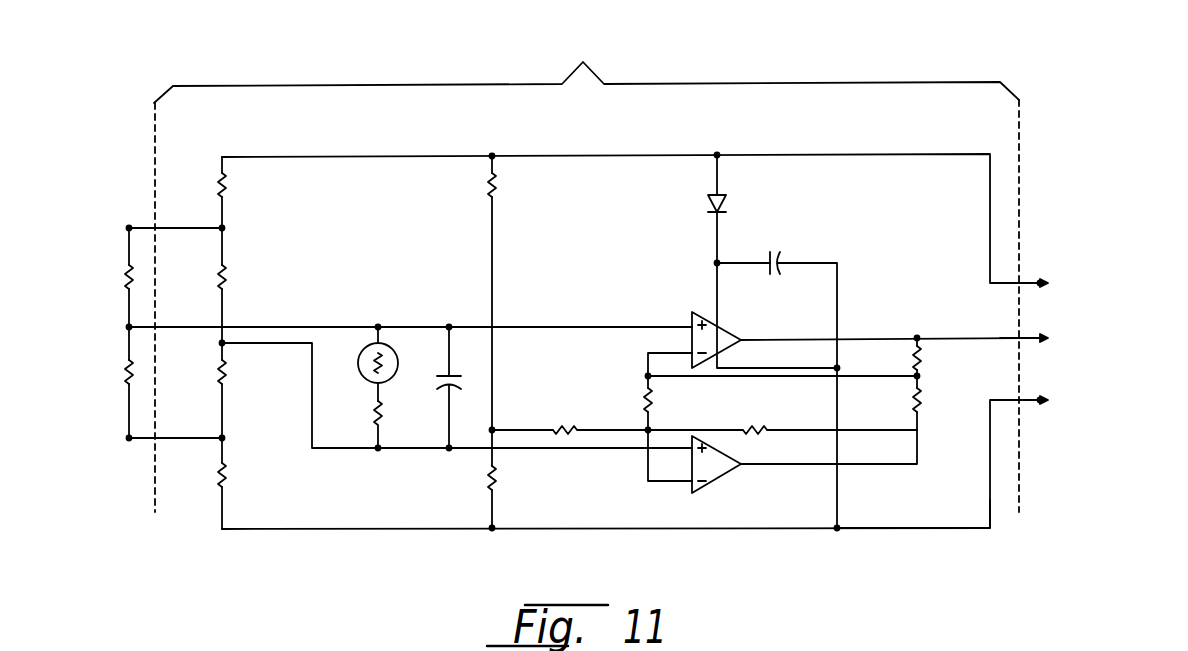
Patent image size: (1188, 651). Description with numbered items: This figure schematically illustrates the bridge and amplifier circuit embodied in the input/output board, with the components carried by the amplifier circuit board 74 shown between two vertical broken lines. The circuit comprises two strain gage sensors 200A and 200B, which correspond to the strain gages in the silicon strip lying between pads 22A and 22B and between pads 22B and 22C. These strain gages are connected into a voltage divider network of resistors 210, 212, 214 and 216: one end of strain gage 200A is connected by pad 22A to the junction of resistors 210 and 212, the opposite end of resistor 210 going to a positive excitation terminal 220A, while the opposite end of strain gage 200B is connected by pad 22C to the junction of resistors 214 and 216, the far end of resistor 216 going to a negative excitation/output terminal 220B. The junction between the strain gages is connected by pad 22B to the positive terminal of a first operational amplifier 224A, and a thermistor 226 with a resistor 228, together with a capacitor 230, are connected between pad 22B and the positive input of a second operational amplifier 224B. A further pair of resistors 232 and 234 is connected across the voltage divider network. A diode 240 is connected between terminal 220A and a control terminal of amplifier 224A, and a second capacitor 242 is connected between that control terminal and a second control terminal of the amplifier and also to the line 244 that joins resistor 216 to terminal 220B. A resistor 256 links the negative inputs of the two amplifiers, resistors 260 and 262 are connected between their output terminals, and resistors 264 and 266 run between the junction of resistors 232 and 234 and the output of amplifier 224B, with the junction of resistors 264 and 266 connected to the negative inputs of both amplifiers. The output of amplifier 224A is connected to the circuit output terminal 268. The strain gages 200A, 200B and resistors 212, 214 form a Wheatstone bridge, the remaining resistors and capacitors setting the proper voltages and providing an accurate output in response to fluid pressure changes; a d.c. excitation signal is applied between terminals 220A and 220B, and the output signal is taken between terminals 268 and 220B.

The amplifier circuit board 74 is at (586, 274).
The pad 22A is at (129, 228).
The pad 22B is at (129, 327).
The pad 22C is at (129, 438).
The strain gage 200A is at (126, 278).
The strain gage 200B is at (126, 373).
The resistor 210 is at (218, 188).
The resistor 212 is at (218, 281).
The resistor 214 is at (218, 374).
The resistor 216 is at (218, 478).
The thermistor 226 is at (368, 349).
The resistor 228 is at (372, 417).
The capacitor 230 is at (443, 372).
The resistor 232 is at (497, 186).
The resistor 234 is at (497, 478).
The diode 240 is at (724, 197).
The capacitor 242 is at (782, 264).
The first operational amplifier 224A is at (725, 332).
The second operational amplifier 224B is at (727, 473).
The resistor 256 is at (643, 396).
The resistor 260 is at (924, 356).
The resistor 262 is at (924, 401).
The resistor 264 is at (567, 426).
The resistor 266 is at (752, 426).
The line 244 is at (978, 528).
The positive excitation terminal 220A is at (1092, 283).
The negative excitation/output terminal 220B is at (1092, 400).
The circuit output terminal 268 is at (1092, 338).